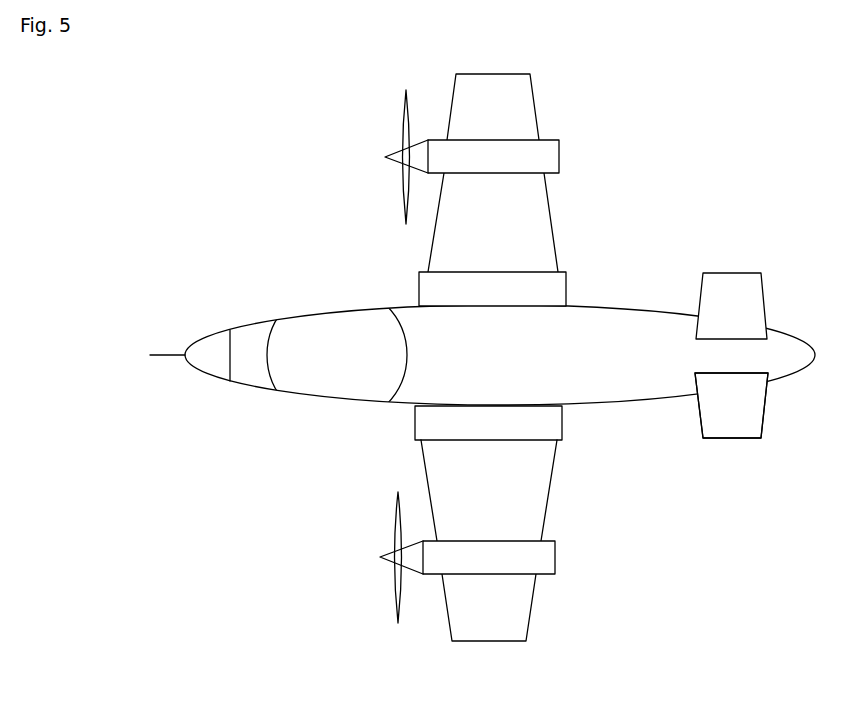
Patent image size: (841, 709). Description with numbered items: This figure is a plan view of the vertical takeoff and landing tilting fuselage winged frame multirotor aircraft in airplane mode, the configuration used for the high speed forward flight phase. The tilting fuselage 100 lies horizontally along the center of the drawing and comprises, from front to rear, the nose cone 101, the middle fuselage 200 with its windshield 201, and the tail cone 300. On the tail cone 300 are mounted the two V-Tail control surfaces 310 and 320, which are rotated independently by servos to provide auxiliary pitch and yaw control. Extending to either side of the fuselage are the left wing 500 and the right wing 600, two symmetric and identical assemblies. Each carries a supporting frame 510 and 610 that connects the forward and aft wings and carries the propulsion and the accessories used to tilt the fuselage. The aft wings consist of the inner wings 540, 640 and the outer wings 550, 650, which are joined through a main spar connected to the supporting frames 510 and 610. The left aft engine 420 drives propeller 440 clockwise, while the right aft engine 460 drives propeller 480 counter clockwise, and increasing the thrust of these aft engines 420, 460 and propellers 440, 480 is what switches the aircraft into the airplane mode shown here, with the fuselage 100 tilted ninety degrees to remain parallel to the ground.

The tilting fuselage 100 is at (265, 429).
The nose cone 101 is at (210, 356).
The middle fuselage 200 is at (453, 337).
The windshield 201 is at (297, 362).
The tail cone 300 is at (788, 355).
The V-Tail control surface 310 is at (731, 412).
The V-Tail control surface 320 is at (741, 310).
The left aft engine 420 is at (453, 567).
The propeller 440 is at (398, 588).
The right aft engine 460 is at (460, 160).
The propeller 480 is at (407, 126).
The left wing 500 is at (476, 550).
The supporting frame 510 is at (528, 427).
The inner wing 540 is at (502, 468).
The outer wing 550 is at (477, 607).
The right wing 600 is at (487, 184).
The supporting frame 610 is at (502, 289).
The inner wing 640 is at (508, 237).
The outer wing 650 is at (510, 92).